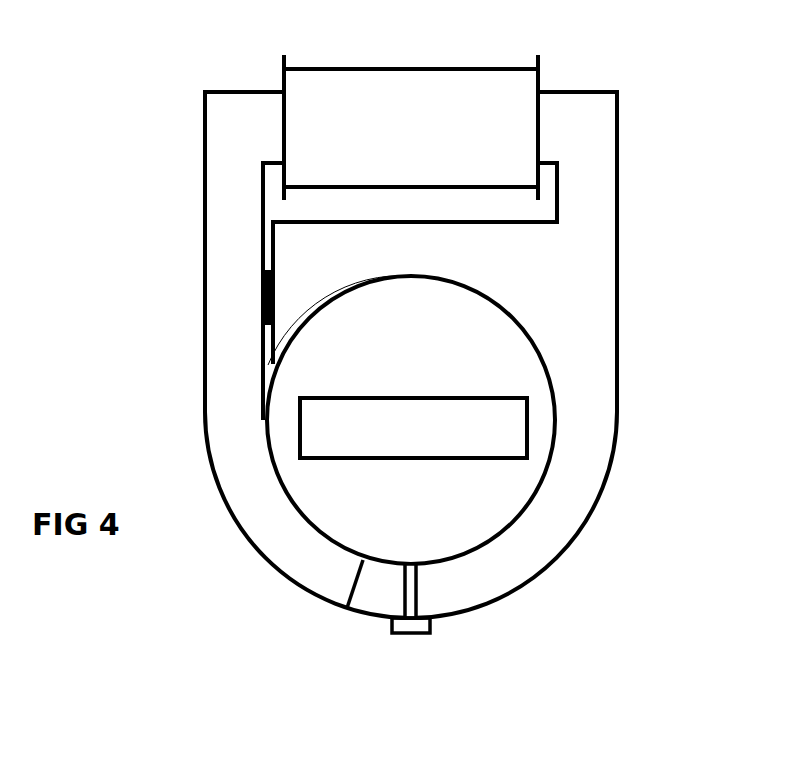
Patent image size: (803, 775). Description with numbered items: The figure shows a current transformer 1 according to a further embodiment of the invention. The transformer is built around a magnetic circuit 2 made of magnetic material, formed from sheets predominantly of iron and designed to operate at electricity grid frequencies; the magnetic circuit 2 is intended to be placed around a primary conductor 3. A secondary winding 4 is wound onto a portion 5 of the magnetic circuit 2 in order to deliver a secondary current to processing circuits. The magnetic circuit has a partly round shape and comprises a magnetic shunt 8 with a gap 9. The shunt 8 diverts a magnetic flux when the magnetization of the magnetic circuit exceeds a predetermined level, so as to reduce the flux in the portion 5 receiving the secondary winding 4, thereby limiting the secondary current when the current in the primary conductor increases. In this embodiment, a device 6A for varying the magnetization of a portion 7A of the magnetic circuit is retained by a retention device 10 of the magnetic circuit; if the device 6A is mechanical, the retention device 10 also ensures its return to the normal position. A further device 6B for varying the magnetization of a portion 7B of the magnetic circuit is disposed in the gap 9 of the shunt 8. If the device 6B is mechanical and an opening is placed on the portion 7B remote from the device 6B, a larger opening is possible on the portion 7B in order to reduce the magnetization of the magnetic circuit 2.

The current transformer 1 is at (644, 312).
The magnetic circuit 2 is at (582, 476).
The primary conductor 3 is at (395, 412).
The secondary winding 4 is at (527, 92).
The portion of the magnetic circuit 5 is at (278, 85).
The device for varying the magnetization 6A is at (412, 562).
The device for varying the magnetization 6B is at (268, 295).
The portion of the magnetic circuit 7A is at (408, 555).
The portion of the magnetic circuit 7B is at (348, 575).
The magnetic shunt 8 is at (380, 272).
The gap 9 is at (268, 372).
The retention device 10 is at (440, 628).